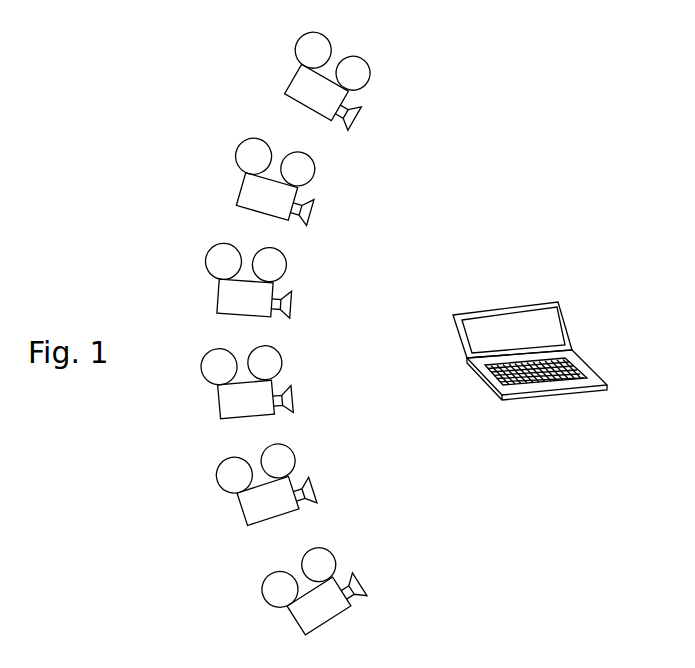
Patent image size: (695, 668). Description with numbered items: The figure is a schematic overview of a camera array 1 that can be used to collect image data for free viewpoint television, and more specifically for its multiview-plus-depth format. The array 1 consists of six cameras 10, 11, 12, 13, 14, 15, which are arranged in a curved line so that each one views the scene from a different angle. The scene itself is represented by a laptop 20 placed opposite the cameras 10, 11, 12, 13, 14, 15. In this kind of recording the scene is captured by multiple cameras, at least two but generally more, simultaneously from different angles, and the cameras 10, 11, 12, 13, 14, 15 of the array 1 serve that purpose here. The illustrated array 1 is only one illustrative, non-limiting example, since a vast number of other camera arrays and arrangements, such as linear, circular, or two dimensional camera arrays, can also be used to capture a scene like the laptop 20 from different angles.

The array 1 is at (152, 95).
The camera 10 is at (285, 85).
The camera 11 is at (242, 192).
The camera 12 is at (218, 297).
The camera 13 is at (218, 405).
The camera 14 is at (242, 512).
The camera 15 is at (292, 622).
The laptop 20 is at (592, 368).